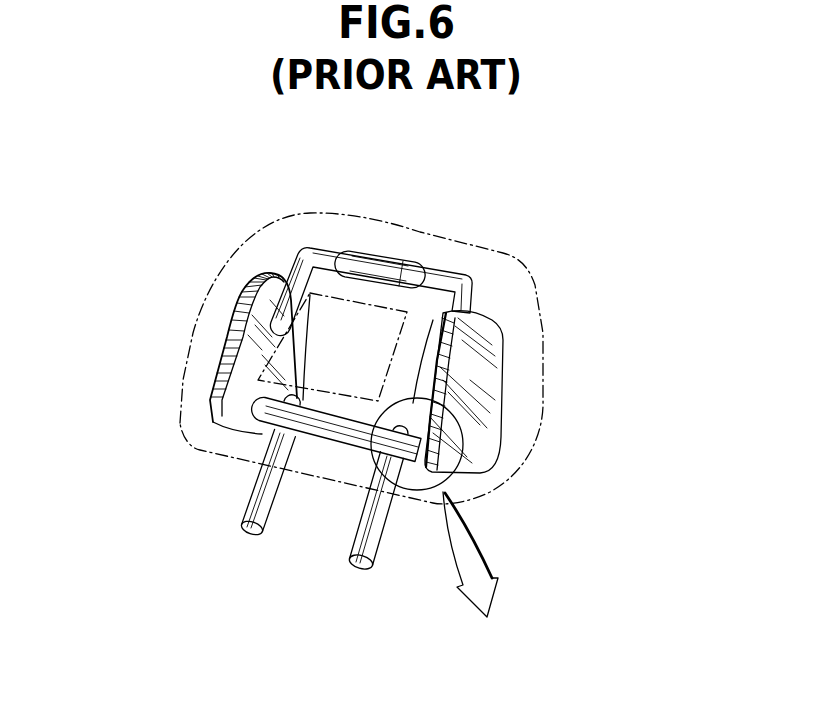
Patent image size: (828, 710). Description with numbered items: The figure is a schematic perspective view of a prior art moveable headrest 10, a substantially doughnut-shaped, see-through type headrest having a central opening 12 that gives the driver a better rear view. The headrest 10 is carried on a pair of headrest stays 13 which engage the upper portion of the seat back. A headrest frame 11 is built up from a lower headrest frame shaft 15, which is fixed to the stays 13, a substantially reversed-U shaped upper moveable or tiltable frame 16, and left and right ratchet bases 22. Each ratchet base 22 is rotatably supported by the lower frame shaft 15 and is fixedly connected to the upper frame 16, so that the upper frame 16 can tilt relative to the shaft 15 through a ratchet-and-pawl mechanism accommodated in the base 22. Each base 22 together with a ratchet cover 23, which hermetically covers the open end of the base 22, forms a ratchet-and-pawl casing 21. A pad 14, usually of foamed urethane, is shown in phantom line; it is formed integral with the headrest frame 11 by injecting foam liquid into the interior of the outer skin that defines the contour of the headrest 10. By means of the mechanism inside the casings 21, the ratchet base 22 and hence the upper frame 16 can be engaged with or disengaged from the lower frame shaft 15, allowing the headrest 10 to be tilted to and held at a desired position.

The moveable headrest 10 is at (552, 326).
The headrest frame 11 is at (447, 268).
The central opening 12 is at (378, 310).
The headrest stays 13 is at (257, 508).
The pad 14 is at (533, 373).
The lower headrest frame shaft 15 is at (342, 428).
The upper moveable frame 16 is at (325, 240).
The ratchet-and-pawl casing 21 is at (195, 397).
The ratchet base 22 is at (240, 400).
The ratchet cover 23 is at (225, 350).